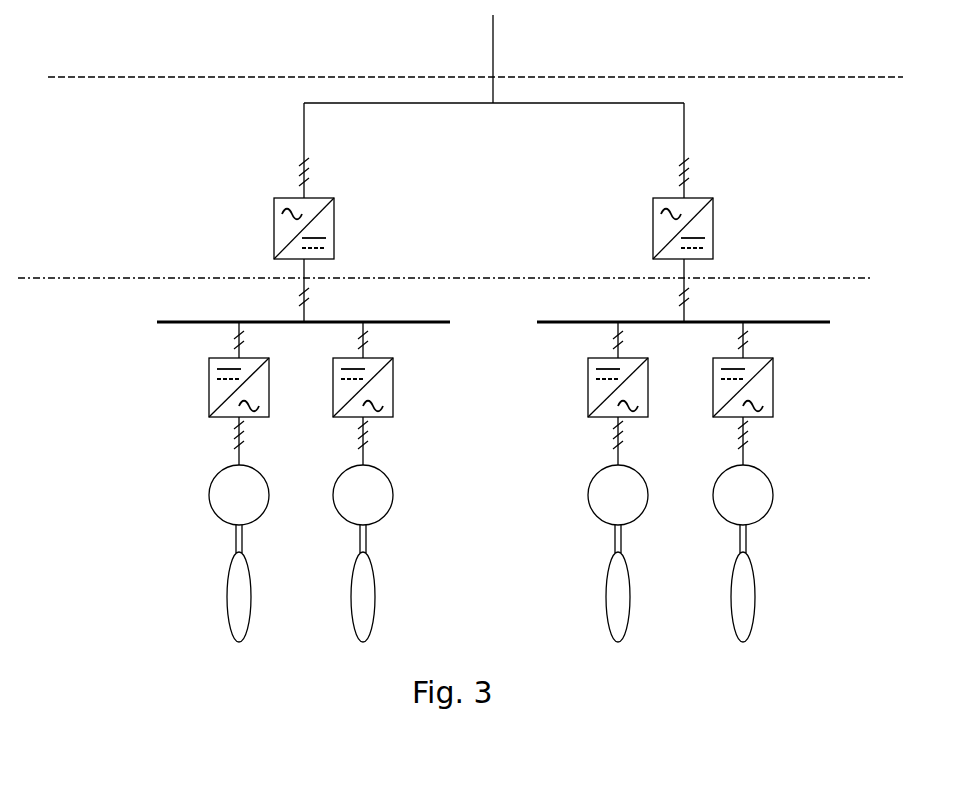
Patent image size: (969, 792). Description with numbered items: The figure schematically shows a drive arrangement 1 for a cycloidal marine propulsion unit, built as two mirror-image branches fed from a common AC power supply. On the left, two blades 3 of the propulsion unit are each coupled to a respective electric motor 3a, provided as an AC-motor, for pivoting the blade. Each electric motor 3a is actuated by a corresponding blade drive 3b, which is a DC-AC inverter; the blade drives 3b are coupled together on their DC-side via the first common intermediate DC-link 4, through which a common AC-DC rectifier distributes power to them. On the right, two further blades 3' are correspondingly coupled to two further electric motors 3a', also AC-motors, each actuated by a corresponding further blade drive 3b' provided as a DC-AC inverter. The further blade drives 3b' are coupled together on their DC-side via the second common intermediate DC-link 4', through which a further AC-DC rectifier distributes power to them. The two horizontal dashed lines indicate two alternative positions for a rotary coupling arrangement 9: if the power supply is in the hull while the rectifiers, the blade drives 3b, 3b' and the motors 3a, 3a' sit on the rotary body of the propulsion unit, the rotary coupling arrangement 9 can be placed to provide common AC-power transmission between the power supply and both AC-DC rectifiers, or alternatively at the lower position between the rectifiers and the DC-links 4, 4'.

The drive arrangement 1 is at (848, 658).
The blades 3 is at (290, 585).
The further blades 3' is at (682, 585).
The electric motors 3a is at (301, 495).
The further electric motors 3a' is at (680, 495).
The blade drives 3b is at (282, 406).
The further blade drives 3b' is at (686, 393).
The first common intermediate DC-link 4 is at (286, 357).
The second common intermediate DC-link 4' is at (703, 356).
The rotary coupling arrangement 9 is at (207, 77).